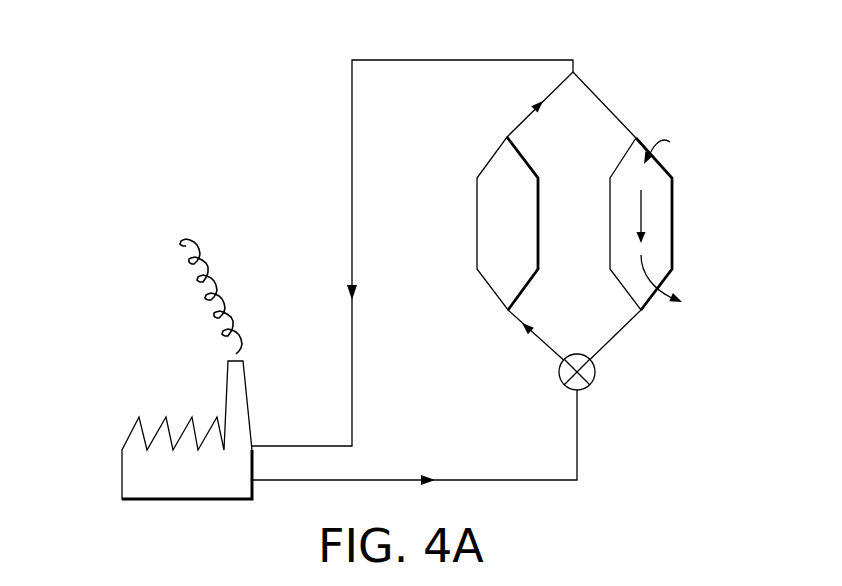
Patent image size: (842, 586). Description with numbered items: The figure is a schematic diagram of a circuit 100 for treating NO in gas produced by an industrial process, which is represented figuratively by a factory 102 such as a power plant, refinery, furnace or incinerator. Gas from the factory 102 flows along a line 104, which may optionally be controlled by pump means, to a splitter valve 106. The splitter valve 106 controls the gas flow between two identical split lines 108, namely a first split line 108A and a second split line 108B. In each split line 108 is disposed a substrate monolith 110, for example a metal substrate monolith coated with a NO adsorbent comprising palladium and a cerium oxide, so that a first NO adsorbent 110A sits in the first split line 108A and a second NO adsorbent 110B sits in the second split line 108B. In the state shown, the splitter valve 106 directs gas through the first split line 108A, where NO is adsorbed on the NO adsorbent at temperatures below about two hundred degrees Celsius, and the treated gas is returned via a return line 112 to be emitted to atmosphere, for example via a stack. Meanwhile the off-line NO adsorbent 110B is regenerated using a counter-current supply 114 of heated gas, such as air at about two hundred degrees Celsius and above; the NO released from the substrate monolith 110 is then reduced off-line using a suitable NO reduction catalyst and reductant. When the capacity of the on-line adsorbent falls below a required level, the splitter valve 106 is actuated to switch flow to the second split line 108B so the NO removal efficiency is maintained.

The circuit 100 is at (225, 80).
The factory 102 is at (121, 485).
The line 104 is at (545, 483).
The splitter valve 106 is at (595, 370).
The split lines 108 is at (615, 335).
The first split line 108A is at (520, 122).
The second split line 108B is at (631, 118).
The substrate monolith 110 is at (576, 223).
The first NO adsorbent 110A is at (487, 227).
The second NO adsorbent 110B is at (662, 222).
The return line 112 is at (458, 58).
The counter-current supply 114 is at (670, 142).